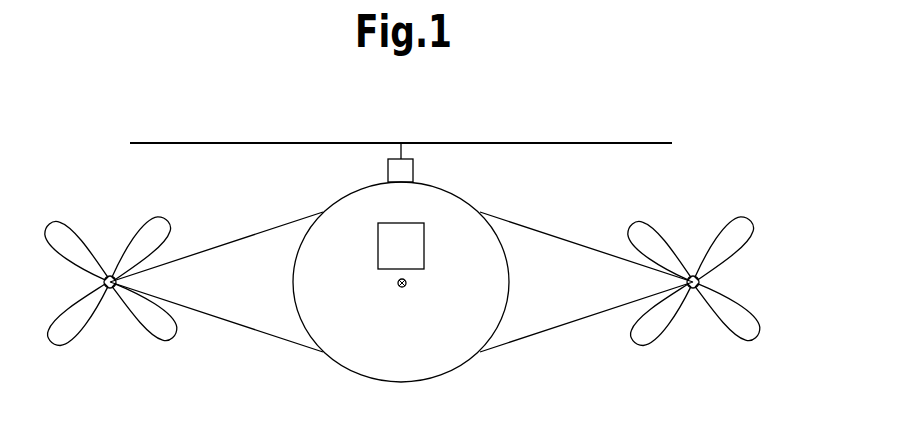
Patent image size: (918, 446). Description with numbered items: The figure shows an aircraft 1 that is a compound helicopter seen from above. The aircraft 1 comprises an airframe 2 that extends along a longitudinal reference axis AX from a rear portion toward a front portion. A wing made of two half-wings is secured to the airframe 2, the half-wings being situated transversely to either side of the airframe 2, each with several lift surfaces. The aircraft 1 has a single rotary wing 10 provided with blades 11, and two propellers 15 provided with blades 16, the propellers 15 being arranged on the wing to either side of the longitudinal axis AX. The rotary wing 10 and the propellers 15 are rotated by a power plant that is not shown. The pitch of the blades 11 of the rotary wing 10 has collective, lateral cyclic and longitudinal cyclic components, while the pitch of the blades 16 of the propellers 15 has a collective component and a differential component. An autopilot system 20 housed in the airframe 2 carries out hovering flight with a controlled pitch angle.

The aircraft 1 is at (795, 257).
The airframe 2 is at (433, 378).
The rotary wing 10 is at (644, 116).
The blades 11 is at (272, 142).
The propeller 15 is at (97, 346).
The blades 16 is at (80, 228).
The autopilot system 20 is at (424, 242).
The longitudinal reference axis AX is at (401, 289).